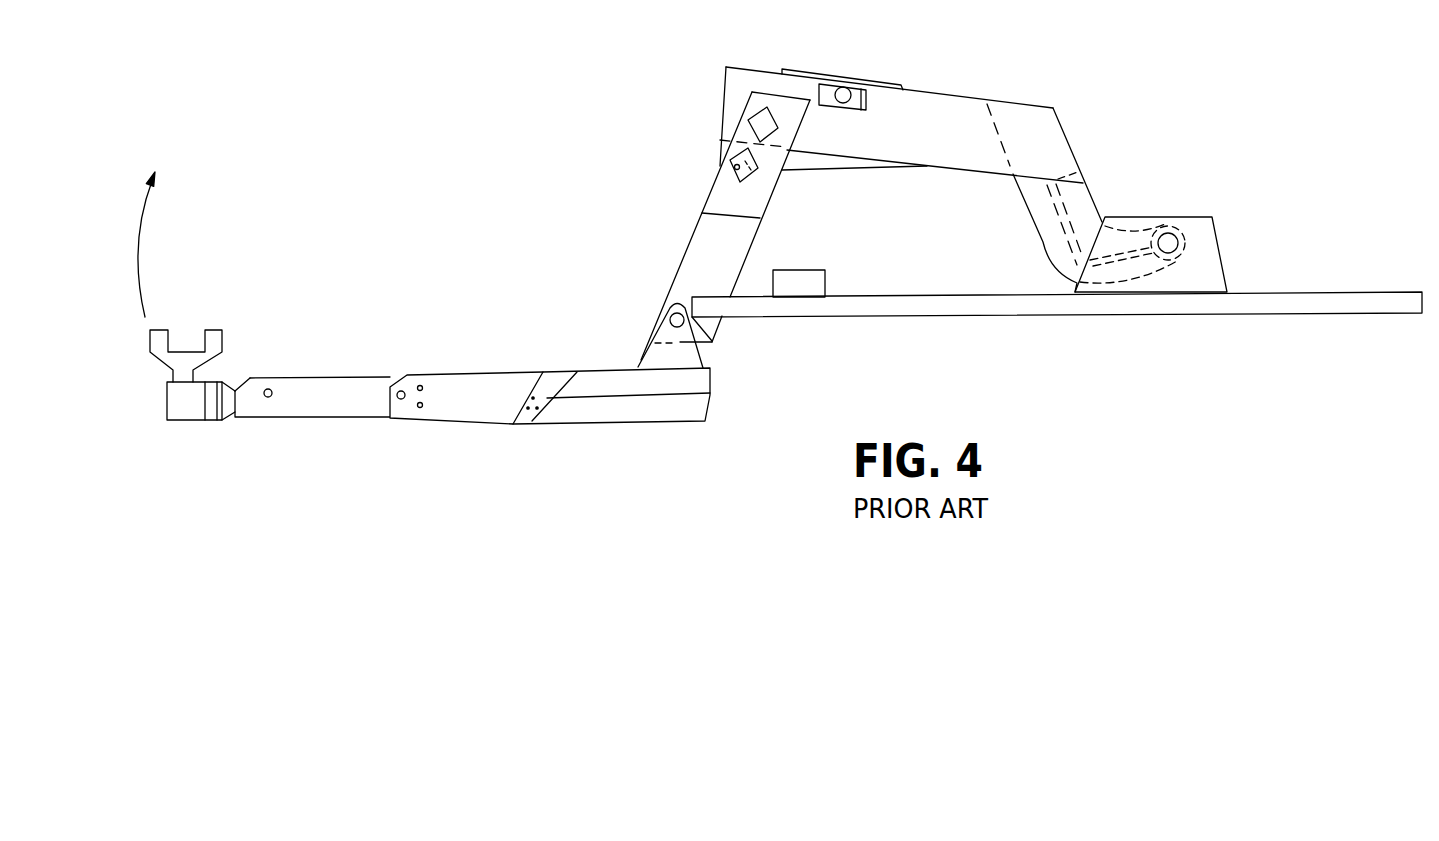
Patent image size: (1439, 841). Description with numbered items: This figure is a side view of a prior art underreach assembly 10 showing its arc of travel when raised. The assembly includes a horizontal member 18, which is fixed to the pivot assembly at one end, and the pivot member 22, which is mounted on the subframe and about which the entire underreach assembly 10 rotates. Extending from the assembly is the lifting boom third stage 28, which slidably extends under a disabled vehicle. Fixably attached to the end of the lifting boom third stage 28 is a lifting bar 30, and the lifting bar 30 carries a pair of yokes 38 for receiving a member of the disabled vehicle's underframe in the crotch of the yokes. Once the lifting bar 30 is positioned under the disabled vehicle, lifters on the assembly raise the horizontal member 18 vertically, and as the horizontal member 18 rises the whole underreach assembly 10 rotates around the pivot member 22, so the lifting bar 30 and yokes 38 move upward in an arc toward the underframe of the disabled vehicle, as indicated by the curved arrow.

The underreach assembly 10 is at (612, 75).
The horizontal member 18 is at (927, 92).
The pivot member 22 is at (1170, 237).
The lifting boom third stage 28 is at (327, 418).
The lifting bar 30 is at (182, 405).
The yokes 38 is at (220, 331).